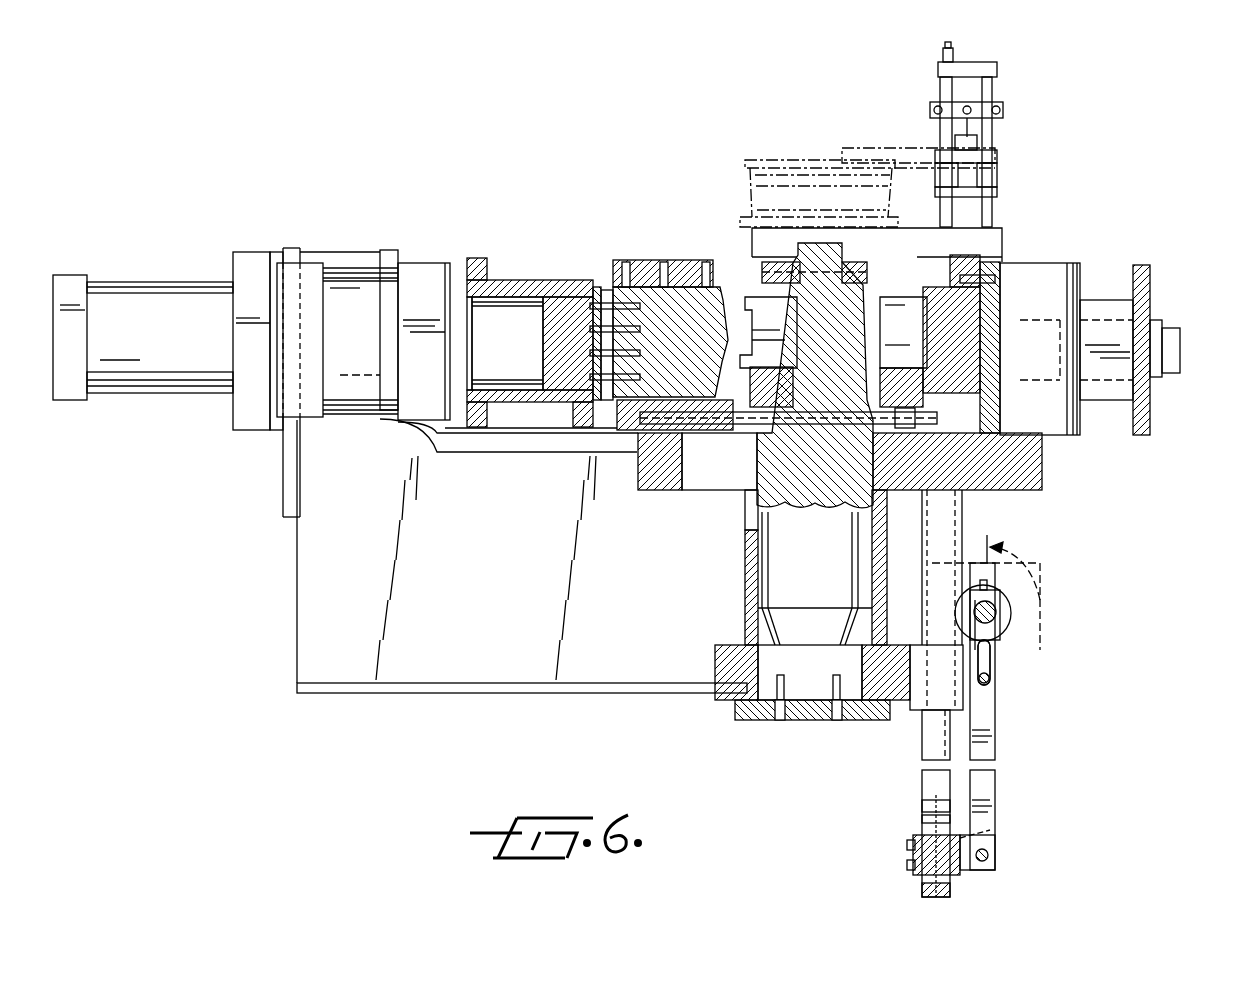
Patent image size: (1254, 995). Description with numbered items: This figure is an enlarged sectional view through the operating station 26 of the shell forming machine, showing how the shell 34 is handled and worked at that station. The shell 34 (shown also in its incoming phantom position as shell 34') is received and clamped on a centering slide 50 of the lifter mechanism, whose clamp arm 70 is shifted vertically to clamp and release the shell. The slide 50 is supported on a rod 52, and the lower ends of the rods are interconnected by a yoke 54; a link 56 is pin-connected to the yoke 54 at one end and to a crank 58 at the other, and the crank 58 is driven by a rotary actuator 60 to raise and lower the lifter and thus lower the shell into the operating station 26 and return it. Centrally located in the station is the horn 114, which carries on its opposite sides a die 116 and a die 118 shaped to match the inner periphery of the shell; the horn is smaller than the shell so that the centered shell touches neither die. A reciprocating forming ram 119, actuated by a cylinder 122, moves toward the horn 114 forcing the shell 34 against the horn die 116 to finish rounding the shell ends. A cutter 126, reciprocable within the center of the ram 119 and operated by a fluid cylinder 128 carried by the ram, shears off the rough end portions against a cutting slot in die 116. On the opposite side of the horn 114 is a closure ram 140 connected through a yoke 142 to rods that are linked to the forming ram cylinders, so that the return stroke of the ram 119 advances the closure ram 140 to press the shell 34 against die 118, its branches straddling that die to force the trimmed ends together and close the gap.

The operating station 26 is at (740, 272).
The shell 34 is at (833, 334).
The shell 34' is at (816, 171).
The centering slide 50 is at (1008, 224).
The rod 52 is at (925, 738).
The yoke 54 is at (950, 897).
The link 56 is at (988, 792).
The crank 58 is at (1000, 664).
The rotary actuator 60 is at (1005, 606).
The clamp arm 70 is at (880, 152).
The horn 114 is at (777, 472).
The horn die 116 is at (722, 425).
The die 118 is at (866, 266).
The forming ram 119 is at (545, 266).
The cylinder 122 is at (137, 292).
The cutter 126 is at (672, 267).
The fluid cylinder 128 is at (340, 276).
The closure ram 140 is at (985, 300).
The yoke 142 is at (1152, 290).